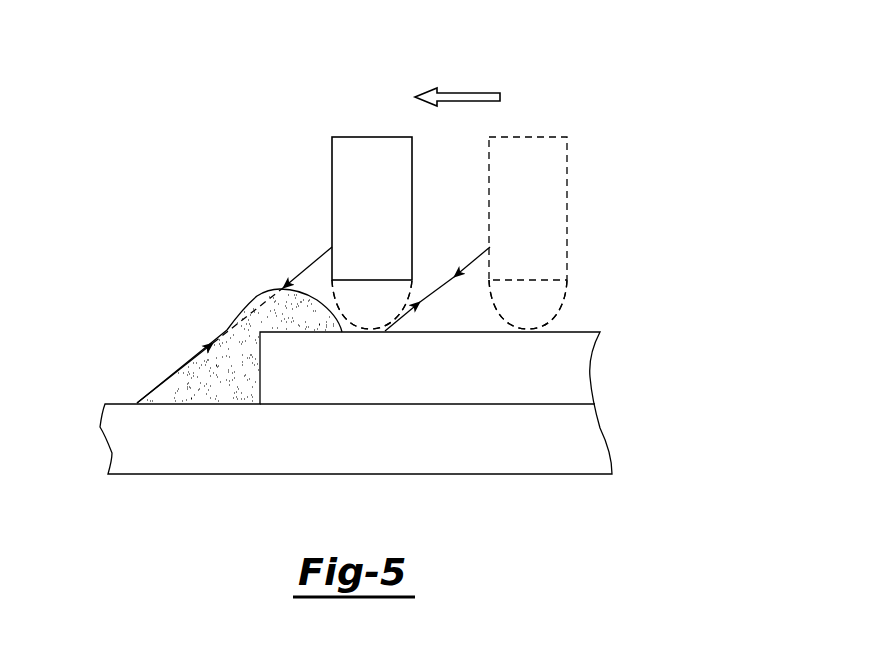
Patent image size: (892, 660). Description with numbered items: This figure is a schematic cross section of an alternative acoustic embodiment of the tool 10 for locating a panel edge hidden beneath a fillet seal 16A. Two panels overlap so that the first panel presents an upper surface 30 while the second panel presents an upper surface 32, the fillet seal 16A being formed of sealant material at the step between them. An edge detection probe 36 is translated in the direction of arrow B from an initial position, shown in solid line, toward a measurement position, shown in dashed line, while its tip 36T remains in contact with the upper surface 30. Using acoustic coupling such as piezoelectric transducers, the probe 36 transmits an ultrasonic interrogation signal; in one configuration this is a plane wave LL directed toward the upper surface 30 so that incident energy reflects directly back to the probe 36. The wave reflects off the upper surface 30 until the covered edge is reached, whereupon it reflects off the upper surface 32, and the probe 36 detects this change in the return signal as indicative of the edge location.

The tool 10 is at (640, 108).
The upper surface of the first panel 30 is at (592, 325).
The upper surface of the second panel 32 is at (122, 401).
The fillet seal 16A is at (253, 292).
The edge detection probe 36 is at (381, 217).
The tip 36T is at (412, 280).
The plane wave LL is at (318, 262).
The direction of probe translation B is at (463, 92).